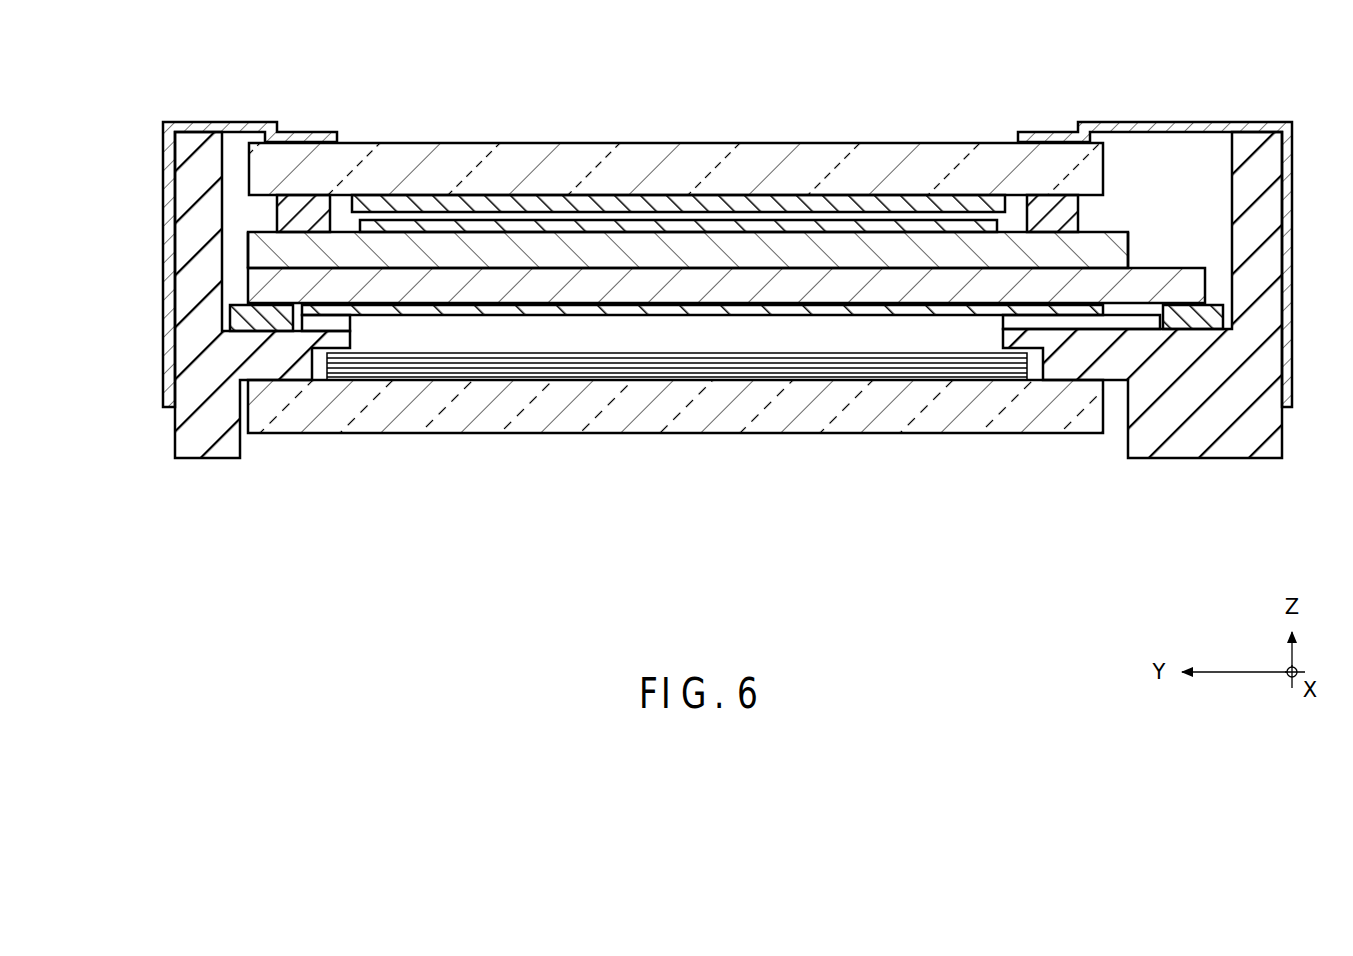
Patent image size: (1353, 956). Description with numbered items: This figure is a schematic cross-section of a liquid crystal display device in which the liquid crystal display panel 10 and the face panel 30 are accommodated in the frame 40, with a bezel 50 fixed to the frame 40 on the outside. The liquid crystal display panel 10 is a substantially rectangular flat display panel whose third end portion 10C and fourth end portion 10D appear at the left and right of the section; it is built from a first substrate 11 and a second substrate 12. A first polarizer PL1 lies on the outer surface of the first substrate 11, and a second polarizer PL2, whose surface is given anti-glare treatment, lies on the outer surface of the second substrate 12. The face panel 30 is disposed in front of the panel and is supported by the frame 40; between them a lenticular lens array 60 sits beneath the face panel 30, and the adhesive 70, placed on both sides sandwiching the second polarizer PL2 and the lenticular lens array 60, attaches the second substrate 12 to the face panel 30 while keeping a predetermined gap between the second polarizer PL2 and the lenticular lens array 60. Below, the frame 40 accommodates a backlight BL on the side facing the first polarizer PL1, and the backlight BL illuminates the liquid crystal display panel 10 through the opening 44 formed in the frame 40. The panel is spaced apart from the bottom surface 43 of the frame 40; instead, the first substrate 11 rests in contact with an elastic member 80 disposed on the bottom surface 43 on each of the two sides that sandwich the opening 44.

The liquid crystal display panel 10 is at (726, 394).
The first substrate 11 is at (625, 297).
The second substrate 12 is at (688, 253).
The third end portion 10C is at (262, 225).
The fourth end portion 10D is at (1099, 225).
The face panel 30 is at (955, 150).
The lenticular lens array 60 is at (896, 208).
The first polarizer PL1 is at (835, 312).
The second polarizer PL2 is at (759, 228).
The adhesive 70 is at (302, 222).
The elastic member 80 is at (268, 322).
The bottom surface 43 is at (330, 316).
The opening 44 is at (472, 341).
The backlight BL is at (675, 426).
The frame 40 is at (185, 254).
The bezel 50 is at (168, 195).